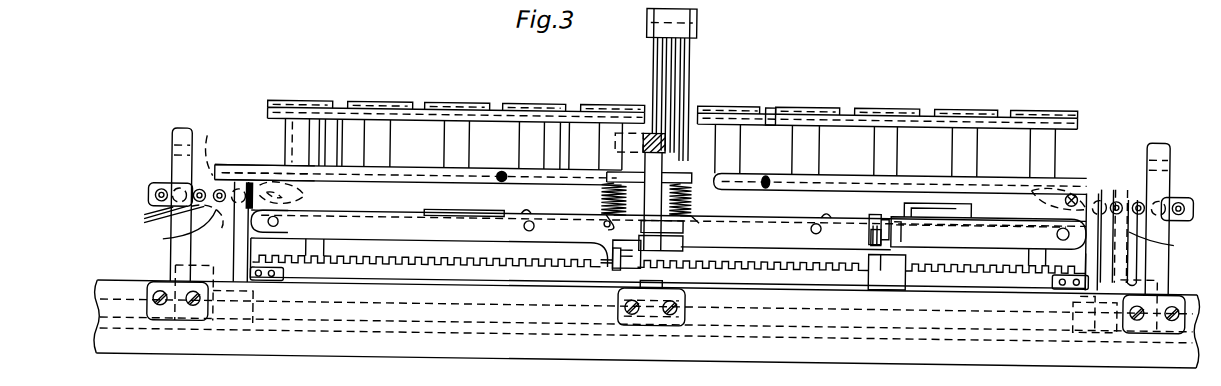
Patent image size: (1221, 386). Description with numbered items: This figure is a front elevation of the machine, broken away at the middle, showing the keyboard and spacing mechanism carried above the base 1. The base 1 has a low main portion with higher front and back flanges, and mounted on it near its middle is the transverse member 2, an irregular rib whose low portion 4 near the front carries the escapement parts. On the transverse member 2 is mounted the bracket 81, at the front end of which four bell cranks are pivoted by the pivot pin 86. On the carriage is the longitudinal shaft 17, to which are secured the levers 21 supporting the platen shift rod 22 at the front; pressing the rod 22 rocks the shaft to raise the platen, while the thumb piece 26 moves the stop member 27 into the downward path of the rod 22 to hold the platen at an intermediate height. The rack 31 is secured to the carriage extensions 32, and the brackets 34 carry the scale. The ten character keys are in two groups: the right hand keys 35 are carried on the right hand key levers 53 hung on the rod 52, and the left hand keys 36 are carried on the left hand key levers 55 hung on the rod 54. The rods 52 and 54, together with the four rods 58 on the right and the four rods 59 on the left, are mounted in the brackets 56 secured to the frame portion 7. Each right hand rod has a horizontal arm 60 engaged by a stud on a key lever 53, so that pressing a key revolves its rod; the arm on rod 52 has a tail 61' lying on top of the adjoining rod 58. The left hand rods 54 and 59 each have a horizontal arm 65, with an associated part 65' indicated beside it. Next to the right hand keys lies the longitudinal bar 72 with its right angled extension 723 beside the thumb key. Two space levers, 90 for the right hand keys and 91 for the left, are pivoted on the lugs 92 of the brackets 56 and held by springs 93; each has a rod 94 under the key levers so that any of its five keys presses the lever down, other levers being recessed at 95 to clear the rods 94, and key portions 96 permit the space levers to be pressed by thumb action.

The base 1 is at (412, 348).
The transverse member 2 is at (627, 126).
The low portion 4 is at (664, 139).
The frame member portion 7 is at (172, 259).
The longitudinal shaft 17 is at (790, 299).
The levers 21 is at (236, 244).
The platen shift rod 22 is at (262, 155).
The thumb piece 26 is at (908, 234).
The stop member 27 is at (930, 202).
The rack 31 is at (667, 264).
The extensions 32 is at (664, 280).
The brackets 34 is at (669, 255).
The right hand character keys 35 is at (745, 94).
The left hand character keys 36 is at (318, 103).
The rod 52 is at (1105, 176).
The right hand key levers 53 is at (765, 177).
The rod 54 is at (235, 185).
The left hand key levers 55 is at (612, 191).
The brackets 56 is at (157, 182).
The rods 58 is at (1130, 186).
The rods 59 is at (163, 216).
The horizontal arm 60 is at (1173, 231).
The tail 61' is at (1122, 208).
The horizontal arm 65 is at (180, 225).
The lever 65' is at (214, 146).
The longitudinal bar 72 is at (868, 88).
The extension 723 is at (770, 99).
The bracket 81 is at (694, 7).
The pivot pin 86 is at (642, 17).
The space lever 90 is at (786, 236).
The space lever 91 is at (669, 241).
The lugs 92 is at (273, 225).
The springs 93 is at (600, 192).
The rod 94 is at (528, 225).
The recess 95 is at (524, 206).
The key portions 96 is at (855, 214).